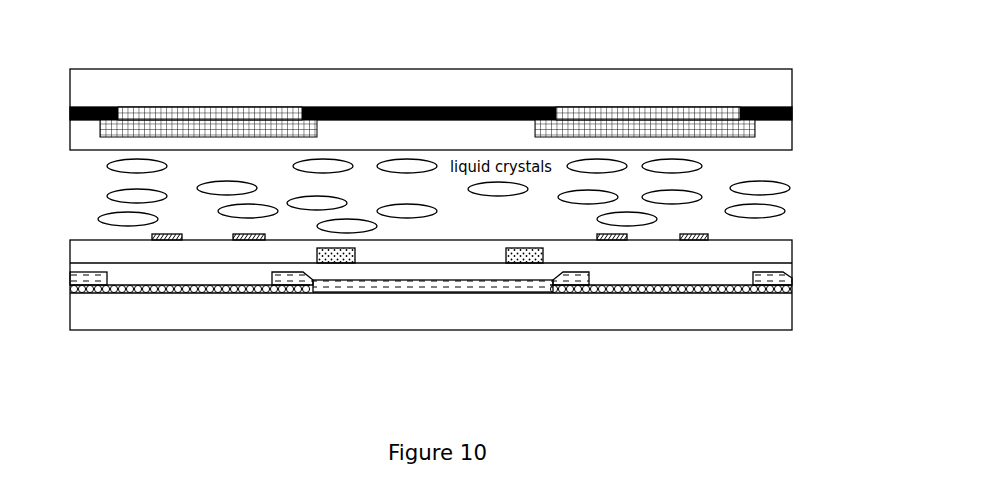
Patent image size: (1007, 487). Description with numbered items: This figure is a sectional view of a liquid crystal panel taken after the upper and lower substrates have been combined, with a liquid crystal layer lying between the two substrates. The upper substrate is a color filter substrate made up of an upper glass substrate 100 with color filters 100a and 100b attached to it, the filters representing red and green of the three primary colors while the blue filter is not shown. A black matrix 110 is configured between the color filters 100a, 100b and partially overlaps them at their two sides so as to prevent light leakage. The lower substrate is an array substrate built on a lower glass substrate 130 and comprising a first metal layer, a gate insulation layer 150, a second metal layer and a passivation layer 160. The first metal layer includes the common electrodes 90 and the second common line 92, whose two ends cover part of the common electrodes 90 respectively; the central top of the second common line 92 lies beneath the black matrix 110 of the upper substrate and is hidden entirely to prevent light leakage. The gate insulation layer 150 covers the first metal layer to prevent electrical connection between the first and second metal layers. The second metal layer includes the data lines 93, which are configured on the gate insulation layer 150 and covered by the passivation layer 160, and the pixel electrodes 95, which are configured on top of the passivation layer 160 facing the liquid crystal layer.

The upper glass substrate 100 is at (293, 97).
The color filter 100a is at (152, 117).
The color filter 100b is at (620, 120).
The black matrix 110 is at (432, 107).
The lower glass substrate 130 is at (747, 308).
The gate insulation layer 150 is at (723, 278).
The passivation layer 160 is at (760, 248).
The common electrodes 90 is at (183, 290).
The second common line 92 is at (447, 287).
The data lines 93 is at (332, 263).
The pixel electrodes 95 is at (167, 234).